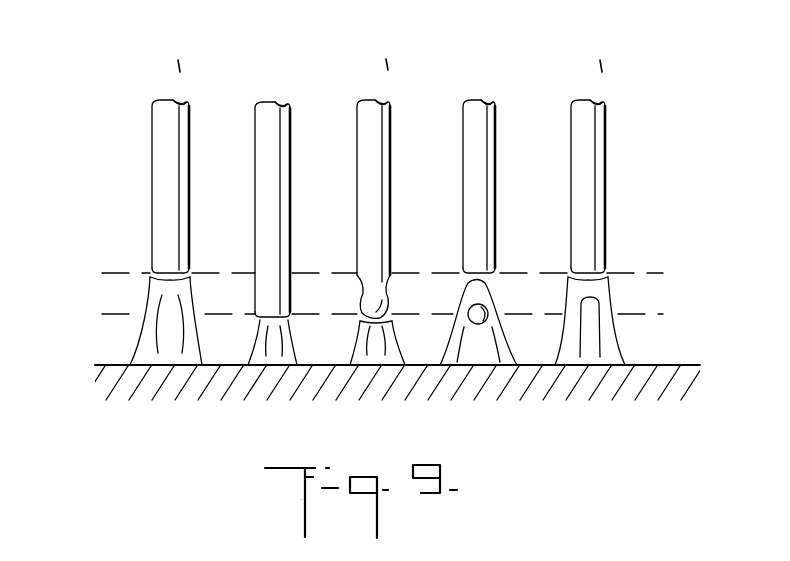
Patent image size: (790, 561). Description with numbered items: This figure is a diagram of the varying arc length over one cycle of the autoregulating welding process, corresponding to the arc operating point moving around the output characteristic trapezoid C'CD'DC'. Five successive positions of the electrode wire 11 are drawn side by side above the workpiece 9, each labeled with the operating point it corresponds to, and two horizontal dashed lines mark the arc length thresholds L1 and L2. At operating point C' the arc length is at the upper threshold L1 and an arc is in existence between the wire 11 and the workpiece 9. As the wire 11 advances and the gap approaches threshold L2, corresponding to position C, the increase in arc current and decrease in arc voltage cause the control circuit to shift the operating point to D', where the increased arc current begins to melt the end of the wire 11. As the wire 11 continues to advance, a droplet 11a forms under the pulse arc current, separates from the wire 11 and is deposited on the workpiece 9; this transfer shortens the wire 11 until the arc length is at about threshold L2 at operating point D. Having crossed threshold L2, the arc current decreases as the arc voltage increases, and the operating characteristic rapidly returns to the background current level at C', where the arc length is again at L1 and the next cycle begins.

The workpiece 9 is at (612, 383).
The electrode wire 11 is at (363, 212).
The droplet 11a is at (478, 324).
The upper threshold arc length L1 is at (118, 271).
The lower threshold arc length L2 is at (118, 312).
The operating point C is at (272, 213).
The operating point C' is at (166, 212).
The operating point D is at (478, 213).
The operating point D' is at (377, 212).